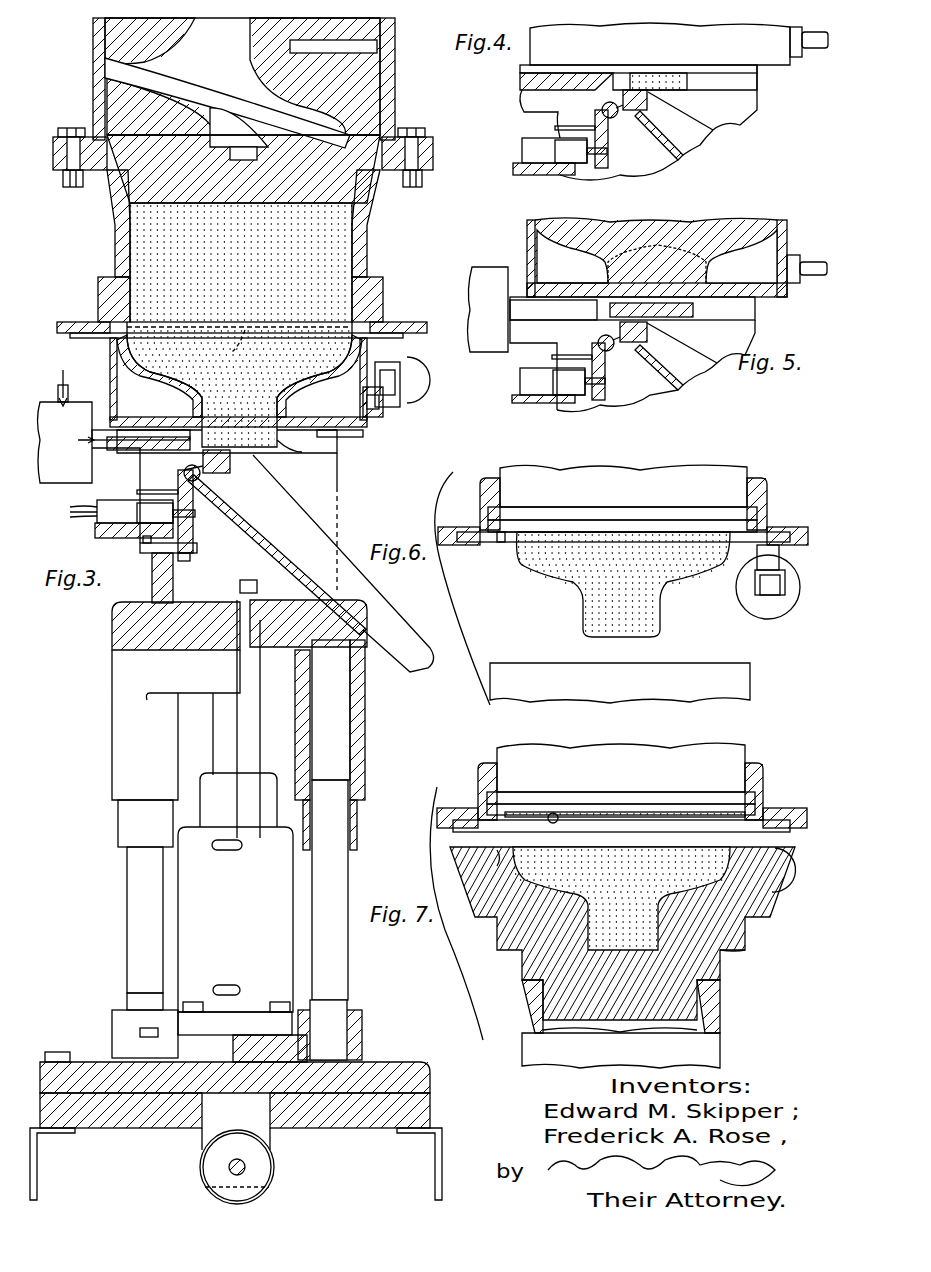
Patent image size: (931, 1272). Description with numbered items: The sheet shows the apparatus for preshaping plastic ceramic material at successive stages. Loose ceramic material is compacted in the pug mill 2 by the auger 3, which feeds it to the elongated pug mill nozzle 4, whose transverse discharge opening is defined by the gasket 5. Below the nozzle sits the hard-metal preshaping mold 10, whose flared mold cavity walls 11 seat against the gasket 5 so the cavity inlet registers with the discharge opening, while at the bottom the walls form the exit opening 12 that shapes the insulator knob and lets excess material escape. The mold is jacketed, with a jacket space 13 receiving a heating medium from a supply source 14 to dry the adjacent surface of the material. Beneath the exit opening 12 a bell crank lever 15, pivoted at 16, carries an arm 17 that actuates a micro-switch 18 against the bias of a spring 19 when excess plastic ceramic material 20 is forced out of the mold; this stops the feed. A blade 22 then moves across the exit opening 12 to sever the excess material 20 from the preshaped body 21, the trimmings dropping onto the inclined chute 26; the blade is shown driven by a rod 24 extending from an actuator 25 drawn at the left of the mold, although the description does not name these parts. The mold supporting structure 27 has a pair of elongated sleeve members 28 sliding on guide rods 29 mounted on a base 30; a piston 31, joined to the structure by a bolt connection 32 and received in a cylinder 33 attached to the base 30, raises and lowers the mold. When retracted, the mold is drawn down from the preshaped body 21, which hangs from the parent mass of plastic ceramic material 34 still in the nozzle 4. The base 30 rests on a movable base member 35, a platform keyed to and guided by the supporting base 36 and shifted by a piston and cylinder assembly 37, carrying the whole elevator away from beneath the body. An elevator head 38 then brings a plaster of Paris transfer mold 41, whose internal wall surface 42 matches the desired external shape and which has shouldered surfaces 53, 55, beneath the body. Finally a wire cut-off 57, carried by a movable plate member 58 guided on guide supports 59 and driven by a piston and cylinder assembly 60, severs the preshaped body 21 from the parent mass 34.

In FIG. 3, the pug mill 2 is at (93, 43).
In FIG. 3, the auger 3 is at (110, 78).
In FIG. 3, the pug mill nozzle 4 is at (110, 245).
In FIG. 6, the pug mill nozzle 4 is at (718, 470).
In FIG. 7, the pug mill nozzle 4 is at (695, 755).
In FIG. 3, the gasket 5 is at (335, 328).
In FIG. 6, the gasket 5 is at (683, 530).
In FIG. 7, the gasket 5 is at (675, 812).
In FIG. 3, the preshaping mold 10 is at (340, 442).
In FIG. 4, the preshaping mold 10 is at (775, 70).
In FIG. 5, the preshaping mold 10 is at (788, 245).
In FIG. 6, the preshaping mold 10 is at (748, 682).
In FIG. 3, the mold cavity walls 11 is at (150, 375).
In FIG. 5, the mold cavity walls 11 is at (575, 250).
In FIG. 3, the exit opening 12 is at (295, 422).
In FIG. 5, the exit opening 12 is at (705, 283).
In FIG. 3, the jacket space 13 is at (352, 433).
In FIG. 3, the supply source 14 is at (393, 410).
In FIG. 4, the supply source 14 is at (818, 48).
In FIG. 5, the supply source 14 is at (810, 280).
In FIG. 3, the bell crank lever 15 is at (230, 470).
In FIG. 4, the bell crank lever 15 is at (648, 105).
In FIG. 5, the bell crank lever 15 is at (648, 337).
In FIG. 3, the pivot 16 is at (184, 474).
In FIG. 4, the pivot 16 is at (614, 118).
In FIG. 5, the pivot 16 is at (598, 342).
In FIG. 3, the arm 17 is at (194, 530).
In FIG. 4, the arm 17 is at (608, 150).
In FIG. 5, the arm 17 is at (606, 375).
In FIG. 3, the micro-switch 18 is at (132, 519).
In FIG. 4, the micro-switch 18 is at (560, 156).
In FIG. 5, the micro-switch 18 is at (558, 385).
In FIG. 3, the spring 19 is at (172, 560).
In FIG. 3, the excess plastic ceramic material 20 is at (280, 451).
In FIG. 4, the excess plastic ceramic material 20 is at (688, 90).
In FIG. 3, the preshaped body 21 is at (200, 395).
In FIG. 5, the preshaped body 21 is at (600, 262).
In FIG. 6, the preshaped body 21 is at (570, 582).
In FIG. 7, the preshaped body 21 is at (580, 885).
In FIG. 3, the blade 22 is at (175, 449).
In FIG. 4, the blade 22 is at (600, 88).
In FIG. 5, the blade 22 is at (685, 308).
In FIG. 3, the actuating rod 24 is at (100, 430).
In FIG. 5, the actuating rod 24 is at (540, 316).
In FIG. 3, the actuating cylinder 25 is at (58, 480).
In FIG. 5, the actuating cylinder 25 is at (480, 345).
In FIG. 3, the inclined chute 26 is at (277, 555).
In FIG. 4, the inclined chute 26 is at (700, 152).
In FIG. 5, the inclined chute 26 is at (695, 385).
In FIG. 3, the preshaping mold supporting structure 27 is at (338, 505).
In FIG. 4, the preshaping mold supporting structure 27 is at (757, 118).
In FIG. 5, the preshaping mold supporting structure 27 is at (757, 330).
In FIG. 3, the elongated sleeve members 28 is at (112, 755).
In FIG. 3, the guide rods 29 is at (123, 914).
In FIG. 3, the base 30 is at (362, 1022).
In FIG. 3, the piston 31 is at (259, 732).
In FIG. 3, the bolt connection 32 is at (257, 586).
In FIG. 3, the cylinder 33 is at (178, 885).
In FIG. 3, the parent mass of plastic ceramic material 34 is at (290, 258).
In FIG. 7, the parent mass of plastic ceramic material 34 is at (617, 814).
In FIG. 3, the movable base member 35 is at (118, 1058).
In FIG. 3, the supporting base 36 is at (390, 1062).
In FIG. 3, the piston and cylinder assembly 37 is at (193, 1163).
In FIG. 7, the elevator head 38 is at (715, 1045).
In FIG. 7, the transfer mold 41 is at (784, 917).
In FIG. 7, the internal wall surface 42 is at (502, 858).
In FIG. 7, the shouldered surface 53 is at (765, 925).
In FIG. 7, the shouldered surface 55 is at (740, 955).
In FIG. 3, the wire cut-off 57 is at (230, 347).
In FIG. 6, the wire cut-off 57 is at (506, 530).
In FIG. 7, the wire cut-off 57 is at (553, 813).
In FIG. 3, the movable plate member 58 is at (98, 338).
In FIG. 6, the movable plate member 58 is at (485, 542).
In FIG. 7, the movable plate member 58 is at (770, 822).
In FIG. 3, the guide supports 59 is at (405, 324).
In FIG. 6, the guide supports 59 is at (450, 527).
In FIG. 7, the guide supports 59 is at (448, 808).
In FIG. 3, the piston and cylinder assembly 60 is at (422, 375).
In FIG. 6, the piston and cylinder assembly 60 is at (790, 608).
In FIG. 7, the piston and cylinder assembly 60 is at (795, 885).